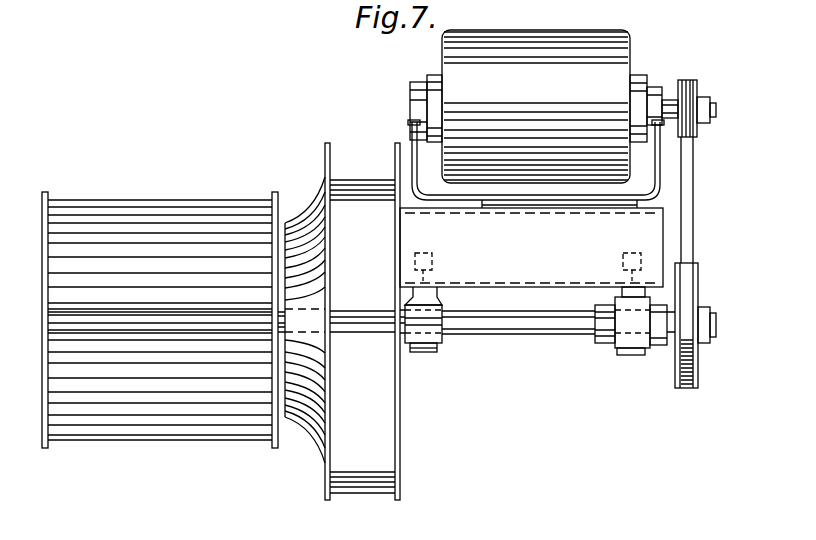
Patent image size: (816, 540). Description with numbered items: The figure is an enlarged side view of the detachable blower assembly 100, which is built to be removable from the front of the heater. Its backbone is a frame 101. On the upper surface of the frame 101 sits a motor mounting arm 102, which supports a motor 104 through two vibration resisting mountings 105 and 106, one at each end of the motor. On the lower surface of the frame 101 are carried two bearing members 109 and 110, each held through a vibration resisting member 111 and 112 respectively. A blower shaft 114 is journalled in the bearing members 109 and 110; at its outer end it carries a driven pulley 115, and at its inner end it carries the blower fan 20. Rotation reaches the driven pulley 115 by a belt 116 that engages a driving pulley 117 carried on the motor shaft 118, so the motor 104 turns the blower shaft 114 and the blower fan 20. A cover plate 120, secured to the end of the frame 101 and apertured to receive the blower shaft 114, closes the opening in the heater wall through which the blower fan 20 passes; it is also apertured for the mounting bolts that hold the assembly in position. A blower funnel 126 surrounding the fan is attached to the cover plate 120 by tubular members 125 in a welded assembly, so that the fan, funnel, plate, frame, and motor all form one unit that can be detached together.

The blower fan 20 is at (162, 212).
The detachable blower assembly 100 is at (385, 319).
The frame 101 is at (569, 259).
The motor mounting arm 102 is at (660, 172).
The motor 104 is at (547, 47).
The vibration resisting mounting 105 is at (412, 83).
The vibration resisting mounting 106 is at (653, 83).
The bearing member 109 is at (418, 348).
The bearing member 110 is at (632, 351).
The vibration resisting member 111 is at (435, 291).
The vibration resisting member 112 is at (620, 290).
The blower shaft 114 is at (525, 331).
The driven pulley 115 is at (698, 358).
The belt 116 is at (690, 202).
The driving pulley 117 is at (698, 83).
The motor shaft 118 is at (716, 107).
The cover plate 120 is at (397, 425).
The tubular members 125 is at (362, 495).
The blower funnel 126 is at (305, 422).